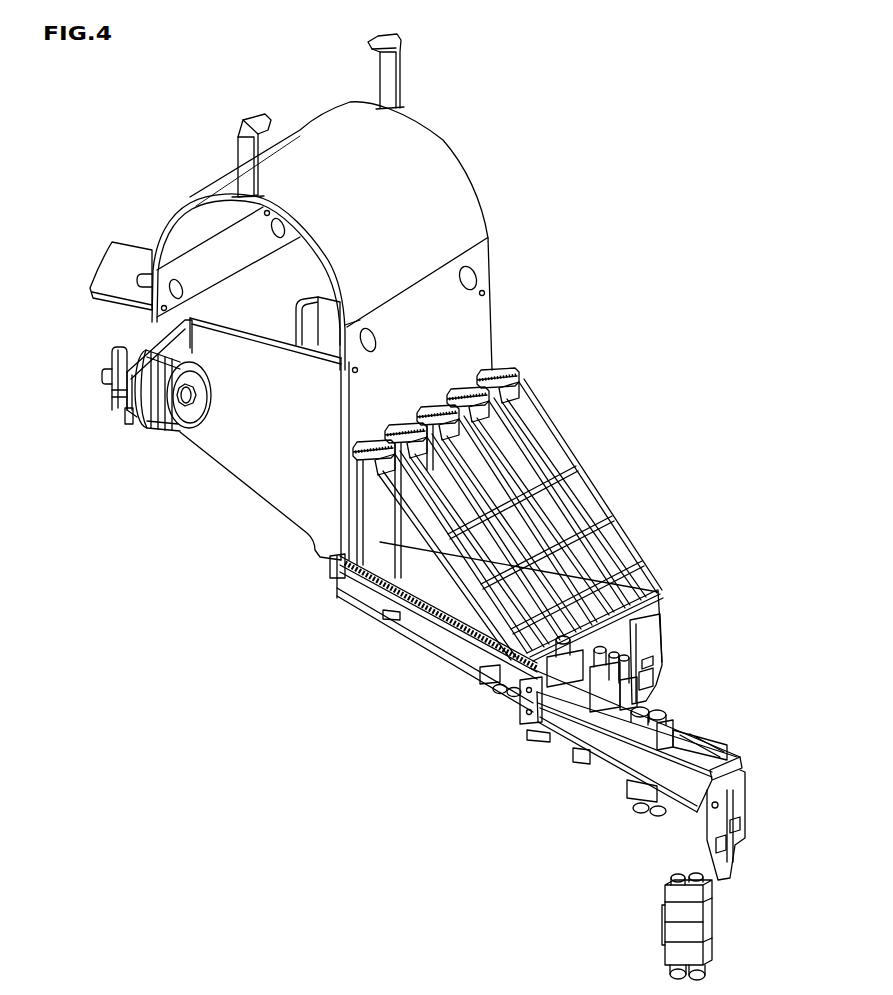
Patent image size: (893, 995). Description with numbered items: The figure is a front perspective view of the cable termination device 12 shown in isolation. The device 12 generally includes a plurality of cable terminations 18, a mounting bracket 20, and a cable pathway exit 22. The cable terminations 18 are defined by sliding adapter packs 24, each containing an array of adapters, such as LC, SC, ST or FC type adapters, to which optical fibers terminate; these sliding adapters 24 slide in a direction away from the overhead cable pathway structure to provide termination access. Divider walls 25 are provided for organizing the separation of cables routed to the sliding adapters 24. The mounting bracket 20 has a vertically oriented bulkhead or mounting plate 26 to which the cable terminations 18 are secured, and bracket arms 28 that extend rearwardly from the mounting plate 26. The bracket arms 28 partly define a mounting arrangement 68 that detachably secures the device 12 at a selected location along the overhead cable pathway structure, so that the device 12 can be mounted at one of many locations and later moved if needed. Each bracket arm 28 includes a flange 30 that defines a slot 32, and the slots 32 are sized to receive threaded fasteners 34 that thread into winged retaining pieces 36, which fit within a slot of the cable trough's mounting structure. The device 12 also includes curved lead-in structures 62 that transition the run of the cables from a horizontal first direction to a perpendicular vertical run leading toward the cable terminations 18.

The cable termination device 12 is at (628, 322).
The cable terminations 18 is at (679, 620).
The mounting bracket 20 is at (507, 258).
The cable pathway exit 22 is at (449, 126).
The sliding adapter packs 24 is at (667, 697).
The divider walls 25 is at (547, 488).
The mounting plate 26 is at (482, 330).
The bracket arms 28 is at (287, 487).
The flange 30 is at (163, 343).
The slot 32 is at (127, 402).
The threaded fastener 34 is at (164, 430).
The winged retaining piece 36 is at (115, 358).
The curved lead-in structure 62 is at (133, 250).
The mounting arrangement 68 is at (99, 410).